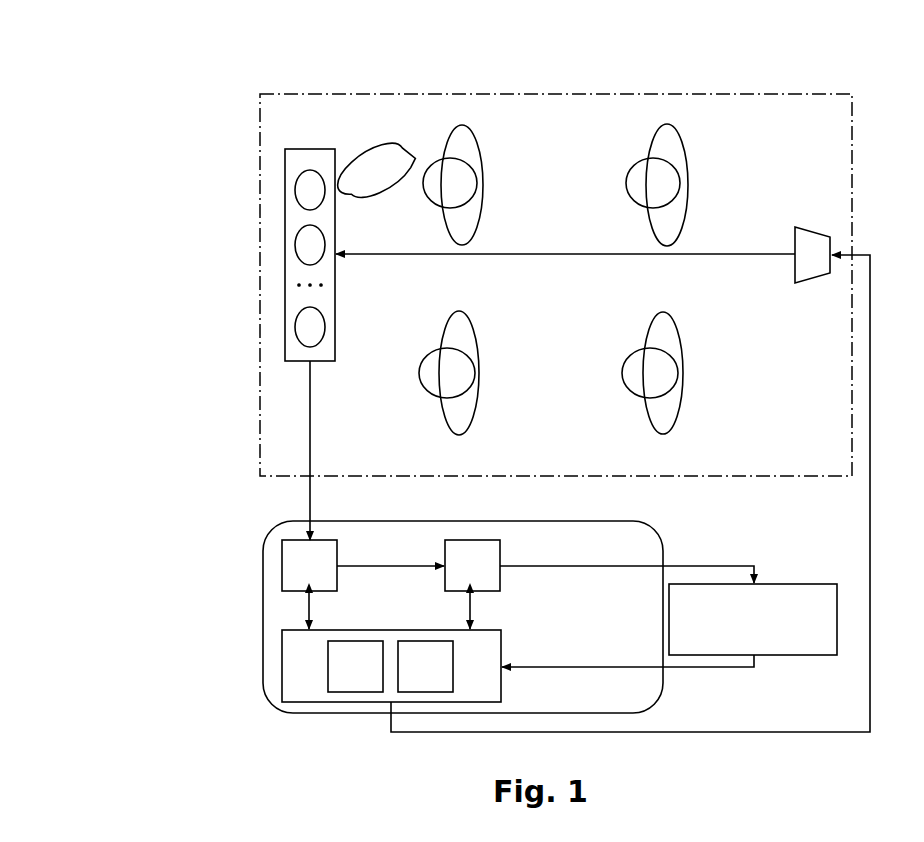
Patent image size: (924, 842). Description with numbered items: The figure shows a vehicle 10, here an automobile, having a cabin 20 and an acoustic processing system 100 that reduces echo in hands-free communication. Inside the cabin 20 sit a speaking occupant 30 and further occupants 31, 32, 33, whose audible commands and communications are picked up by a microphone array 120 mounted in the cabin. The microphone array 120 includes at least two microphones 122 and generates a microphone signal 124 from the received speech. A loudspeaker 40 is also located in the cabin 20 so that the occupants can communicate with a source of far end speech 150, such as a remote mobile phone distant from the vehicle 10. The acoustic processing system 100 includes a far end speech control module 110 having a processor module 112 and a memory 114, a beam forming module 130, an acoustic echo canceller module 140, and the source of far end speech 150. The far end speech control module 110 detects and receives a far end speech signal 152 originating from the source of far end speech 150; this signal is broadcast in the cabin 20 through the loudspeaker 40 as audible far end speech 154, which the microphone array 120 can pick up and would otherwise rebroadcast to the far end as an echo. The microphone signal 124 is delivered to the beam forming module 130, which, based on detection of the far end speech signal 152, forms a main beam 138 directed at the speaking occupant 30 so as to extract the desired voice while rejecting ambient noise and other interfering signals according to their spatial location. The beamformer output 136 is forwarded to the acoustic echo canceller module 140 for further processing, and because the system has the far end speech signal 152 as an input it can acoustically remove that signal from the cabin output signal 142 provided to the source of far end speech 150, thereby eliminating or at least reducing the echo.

The vehicle 10 is at (175, 62).
The cabin 20 is at (258, 122).
The speaking occupant 30 is at (440, 160).
The occupant 31 is at (428, 353).
The occupant 32 is at (638, 350).
The occupant 33 is at (637, 163).
The loudspeaker 40 is at (795, 227).
The acoustic processing system 100 is at (263, 612).
The far end speech control module 110 is at (282, 673).
The processor module 112 is at (355, 666).
The memory 114 is at (425, 666).
The microphone array 120 is at (313, 148).
The microphones 122 is at (296, 327).
The microphone signal 124 is at (310, 402).
The beam forming module 130 is at (309, 565).
The beamformer output 136 is at (390, 563).
The main beam 138 is at (375, 171).
The acoustic echo canceller module 140 is at (472, 565).
The cabin output signal 142 is at (556, 567).
The source of far end speech 150 is at (753, 619).
The far end speech signal 152 is at (873, 513).
The audible far end speech 154 is at (572, 253).